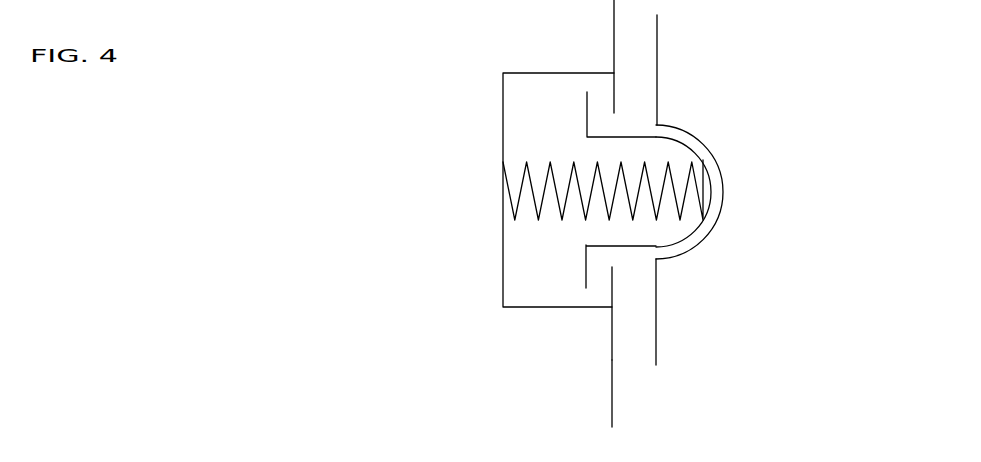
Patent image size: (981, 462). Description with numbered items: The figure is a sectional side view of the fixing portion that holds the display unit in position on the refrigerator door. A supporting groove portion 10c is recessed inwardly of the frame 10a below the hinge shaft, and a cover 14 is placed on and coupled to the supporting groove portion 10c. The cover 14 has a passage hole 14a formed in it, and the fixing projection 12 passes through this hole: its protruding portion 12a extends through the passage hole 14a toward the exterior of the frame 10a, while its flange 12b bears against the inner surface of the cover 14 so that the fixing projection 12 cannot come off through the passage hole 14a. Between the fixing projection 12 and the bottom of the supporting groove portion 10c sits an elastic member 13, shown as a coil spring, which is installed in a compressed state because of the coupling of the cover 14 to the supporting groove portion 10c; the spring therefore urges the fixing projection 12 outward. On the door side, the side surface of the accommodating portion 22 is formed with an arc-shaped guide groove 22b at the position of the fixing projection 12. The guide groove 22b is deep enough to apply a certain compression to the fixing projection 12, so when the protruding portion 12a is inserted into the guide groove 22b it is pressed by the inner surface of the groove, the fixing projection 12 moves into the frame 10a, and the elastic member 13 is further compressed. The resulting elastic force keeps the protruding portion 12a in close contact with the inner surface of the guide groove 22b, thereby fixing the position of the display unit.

The supporting groove portion 10c is at (503, 124).
The frame 10a is at (612, 390).
The fixing projection 12 is at (713, 192).
The protruding portion 12a is at (699, 152).
The flange 12b is at (587, 113).
The elastic member 13 is at (530, 190).
The cover 14 is at (612, 318).
The passage hole 14a is at (615, 128).
The accommodating portion 22 is at (660, 65).
The guide groove 22b is at (702, 235).